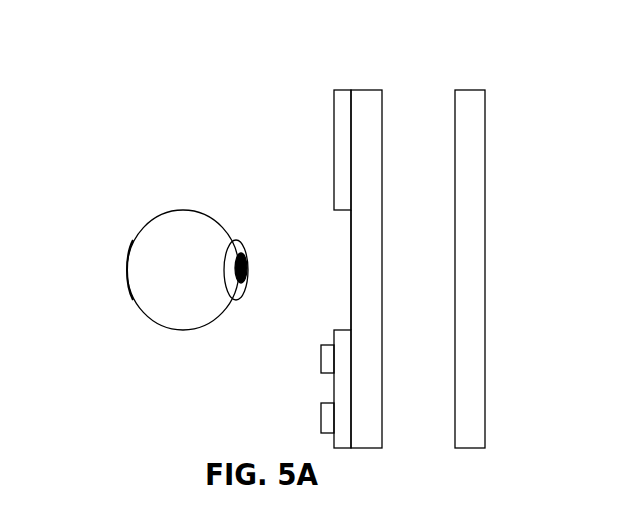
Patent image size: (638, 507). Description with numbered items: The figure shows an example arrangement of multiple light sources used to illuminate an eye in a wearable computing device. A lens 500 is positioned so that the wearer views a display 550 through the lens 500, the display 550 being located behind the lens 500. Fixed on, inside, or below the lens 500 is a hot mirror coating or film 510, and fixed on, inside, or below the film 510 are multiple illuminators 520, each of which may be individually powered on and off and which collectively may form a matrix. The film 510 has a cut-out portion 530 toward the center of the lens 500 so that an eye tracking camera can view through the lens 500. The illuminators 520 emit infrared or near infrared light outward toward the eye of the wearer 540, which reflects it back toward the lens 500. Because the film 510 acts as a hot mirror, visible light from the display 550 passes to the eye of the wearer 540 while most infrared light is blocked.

The lens 500 is at (363, 90).
The hot mirror coating or film 510 is at (334, 128).
The illuminators 520 is at (321, 355).
The cut-out portion 530 is at (338, 243).
The eye of a wearer 540 is at (165, 210).
The display 550 is at (467, 90).